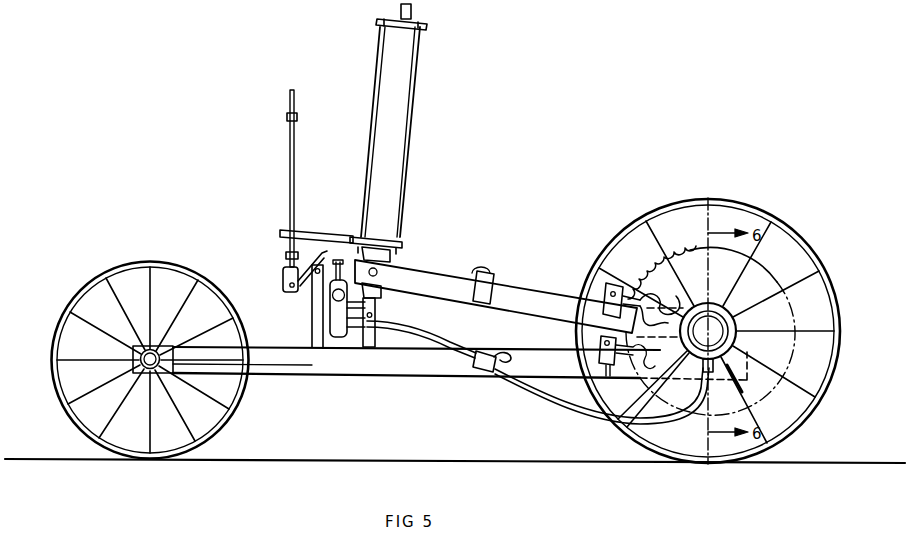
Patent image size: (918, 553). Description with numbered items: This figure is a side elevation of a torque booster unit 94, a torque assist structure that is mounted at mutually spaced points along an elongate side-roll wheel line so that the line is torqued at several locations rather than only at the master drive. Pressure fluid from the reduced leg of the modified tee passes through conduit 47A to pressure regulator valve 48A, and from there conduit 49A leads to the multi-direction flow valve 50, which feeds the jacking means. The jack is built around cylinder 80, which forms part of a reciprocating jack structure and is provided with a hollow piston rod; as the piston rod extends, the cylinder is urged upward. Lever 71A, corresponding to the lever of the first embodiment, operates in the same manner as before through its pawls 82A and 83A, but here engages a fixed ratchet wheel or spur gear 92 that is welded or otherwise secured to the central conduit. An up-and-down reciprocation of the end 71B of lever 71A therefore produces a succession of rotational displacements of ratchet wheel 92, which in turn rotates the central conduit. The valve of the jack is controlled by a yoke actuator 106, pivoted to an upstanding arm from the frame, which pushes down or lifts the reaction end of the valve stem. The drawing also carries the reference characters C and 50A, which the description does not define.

The hydraulic cylinder C is at (400, 137).
The cylinder 80 is at (383, 189).
The yoke actuator 106 is at (343, 214).
The torque booster unit 94 is at (428, 267).
The lever 71A is at (493, 272).
The multi-direction flow valve 50 is at (333, 315).
The valve bracket 50A is at (372, 350).
The conduit 49A is at (418, 337).
The pressure regulator valve 48A is at (478, 380).
The conduit 47A is at (568, 405).
The pawl 82A is at (627, 282).
The end of lever 71B is at (684, 309).
The pawl 83A is at (668, 350).
The ratchet wheel or spur gear 92 is at (753, 285).